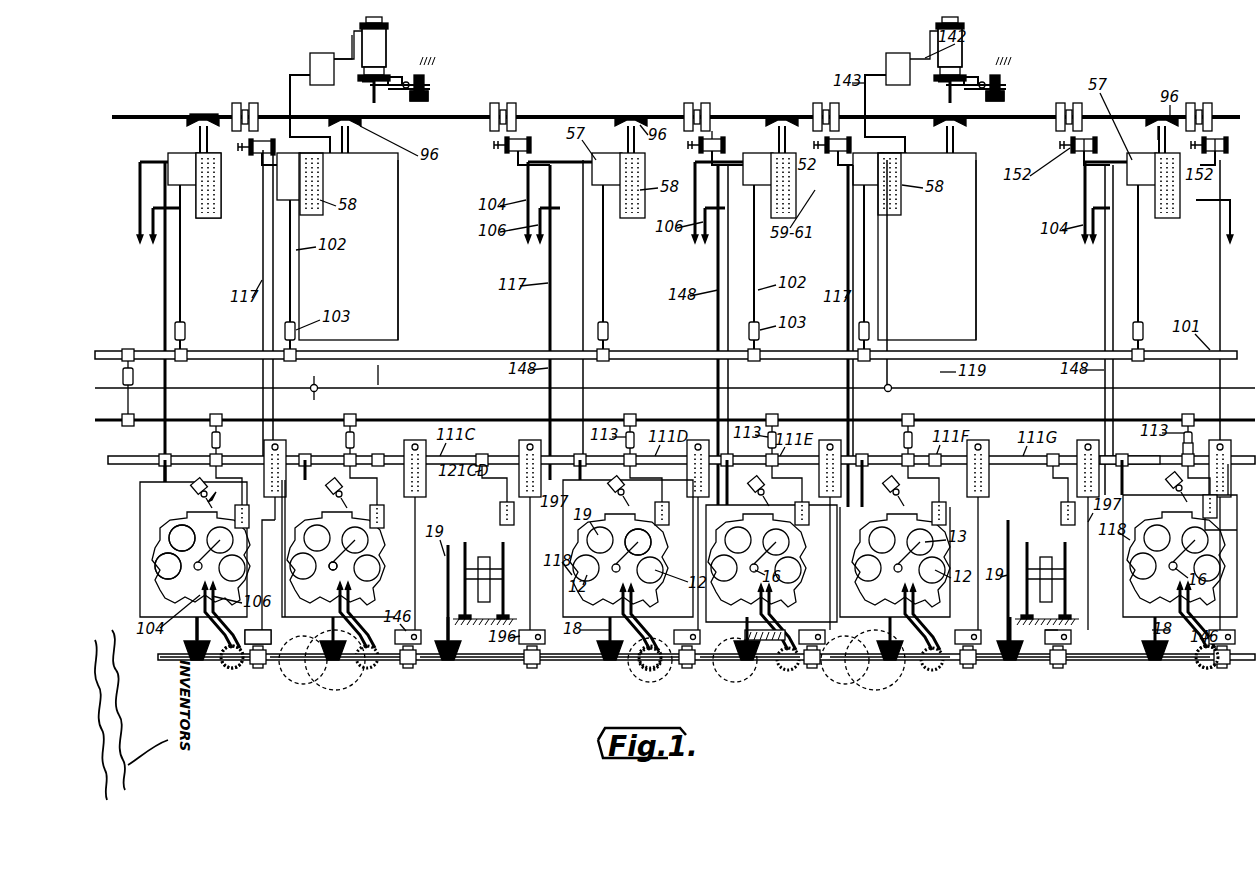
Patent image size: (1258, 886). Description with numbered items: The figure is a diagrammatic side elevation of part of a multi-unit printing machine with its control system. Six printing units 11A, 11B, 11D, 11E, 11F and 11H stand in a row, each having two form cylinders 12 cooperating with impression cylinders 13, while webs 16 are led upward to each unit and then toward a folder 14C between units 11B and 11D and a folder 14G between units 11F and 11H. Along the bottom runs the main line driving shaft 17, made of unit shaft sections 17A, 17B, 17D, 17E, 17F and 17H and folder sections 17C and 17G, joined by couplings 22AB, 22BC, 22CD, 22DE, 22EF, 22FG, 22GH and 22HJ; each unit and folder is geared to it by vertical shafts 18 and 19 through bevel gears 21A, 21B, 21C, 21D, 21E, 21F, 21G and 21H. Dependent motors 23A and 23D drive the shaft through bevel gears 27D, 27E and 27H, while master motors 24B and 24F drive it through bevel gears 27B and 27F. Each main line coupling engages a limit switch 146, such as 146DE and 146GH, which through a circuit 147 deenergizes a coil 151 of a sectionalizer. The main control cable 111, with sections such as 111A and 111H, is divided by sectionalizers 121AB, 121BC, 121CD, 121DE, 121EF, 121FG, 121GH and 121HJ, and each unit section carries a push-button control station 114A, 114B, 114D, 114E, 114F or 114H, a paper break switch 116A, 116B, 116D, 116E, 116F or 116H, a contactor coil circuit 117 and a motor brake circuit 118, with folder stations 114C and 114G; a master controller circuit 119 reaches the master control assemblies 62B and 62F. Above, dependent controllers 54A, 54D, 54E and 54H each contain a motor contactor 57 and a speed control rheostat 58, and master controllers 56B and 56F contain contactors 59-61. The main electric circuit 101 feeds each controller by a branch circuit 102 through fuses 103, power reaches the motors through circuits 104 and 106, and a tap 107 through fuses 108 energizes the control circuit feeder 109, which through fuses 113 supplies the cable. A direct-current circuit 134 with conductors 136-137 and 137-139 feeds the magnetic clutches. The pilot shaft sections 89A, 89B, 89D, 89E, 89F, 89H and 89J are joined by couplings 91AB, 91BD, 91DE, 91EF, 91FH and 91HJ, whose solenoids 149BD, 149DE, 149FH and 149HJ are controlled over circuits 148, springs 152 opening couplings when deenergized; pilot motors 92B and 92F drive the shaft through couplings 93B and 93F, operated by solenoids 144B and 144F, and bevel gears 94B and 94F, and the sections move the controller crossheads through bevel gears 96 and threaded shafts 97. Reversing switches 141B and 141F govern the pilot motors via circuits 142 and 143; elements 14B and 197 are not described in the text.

The pilot shaft section 89A is at (140, 116).
The pilot shaft section 89B is at (318, 110).
The pilot shaft section 89D is at (610, 116).
The pilot shaft section 89E is at (730, 116).
The pilot shaft section 89F is at (900, 116).
The pilot shaft section 89H is at (1110, 116).
The pilot shaft section 89J is at (1220, 116).
The electrically operated coupling 91AB is at (242, 102).
The electrically operated coupling 91BD is at (503, 102).
The electrically operated coupling 91DE is at (696, 102).
The electrically operated coupling 91EF is at (826, 102).
The electrically operated coupling 91FH is at (1069, 102).
The electrically operated coupling 91HJ is at (1199, 102).
The spring 152 is at (500, 145).
The solenoid 149BD is at (512, 155).
The solenoid 149DE is at (742, 127).
The solenoid 149FH is at (1090, 150).
The solenoid 149HJ is at (1218, 158).
The dependent motor controller 54A is at (197, 160).
The dependent motor controller 54D is at (625, 155).
The dependent motor controller 54E is at (780, 153).
The dependent motor controller 54H is at (1158, 153).
The paired bevel gears 96 is at (215, 115).
The pair of bevel gears 94B is at (368, 122).
The pair of bevel gears 94F is at (965, 122).
The threaded shaft 97 is at (1158, 128).
The reversing switch 141B is at (312, 60).
The circuit 142 is at (345, 58).
The pilot motor 92B is at (390, 38).
The electrically operated coupling 93B is at (400, 82).
The solenoid 144B is at (430, 95).
The circuit 143 is at (288, 90).
The reversing switch 141F is at (887, 60).
The pilot motor 92F is at (965, 38).
The electrically operated coupling 93F is at (975, 82).
The solenoid 144F is at (1008, 94).
The solenoid operated motor contactor 57 is at (172, 160).
The speed control rheostat 58 is at (208, 216).
The solenoid operated motor contactors 59-61 is at (290, 176).
The master motor controller 56B is at (348, 246).
The master control assembly 62B is at (398, 280).
The master motor controller 56F is at (927, 246).
The master control assembly 62F is at (976, 232).
The circuit 104 is at (138, 188).
The circuit 106 is at (150, 218).
The contactor coil circuit 117 is at (162, 280).
The circuit 148 is at (1218, 276).
The circuit 147 is at (1118, 306).
The branch circuit 102 is at (183, 287).
The fuses 103 is at (186, 333).
The main electric circuit 101 is at (430, 350).
The circuit 134 is at (612, 387).
The conductors 136-137 is at (346, 372).
The conductors 137-139 is at (346, 401).
The master controller circuit 119 is at (380, 374).
The control circuit feeder 109 is at (440, 414).
The tap 107 is at (122, 370).
The fuses 108 is at (125, 388).
The fuses 113 is at (212, 437).
The valve 14B is at (340, 460).
The coil 151 is at (1184, 447).
The control cable section 111A is at (122, 456).
The control cable section 111H is at (1135, 456).
The main control cable 111 is at (1240, 489).
The sectionalizer 121AB is at (268, 470).
The sectionalizer 121BC is at (406, 468).
The sectionalizer 121CD is at (528, 450).
The sectionalizer 121DE is at (690, 466).
The sectionalizer 121EF is at (827, 440).
The sectionalizer 121FG is at (982, 445).
The sectionalizer 121GH is at (1086, 440).
The sectionalizer 121HJ is at (1208, 462).
The motor brake circuit 118 is at (140, 540).
The printing unit 11A is at (201, 590).
The printing unit 11B is at (336, 590).
The printing unit 11D is at (619, 592).
The printing unit 11E is at (757, 592).
The printing unit 11F is at (901, 592).
The printing unit 11H is at (1176, 590).
The vertical shaft 19 is at (178, 538).
The impression cylinder 13 is at (650, 542).
The form cylinder 12 is at (166, 570).
The web 16 is at (334, 568).
The paper break switch 116A is at (192, 490).
The push-button control station 114A is at (245, 503).
The paper break switch 116B is at (344, 484).
The push-button control station 114B is at (385, 503).
The paper break switch 116D is at (608, 488).
The push-button control station 114D is at (660, 505).
The paper break switch 116E is at (750, 485).
The push-button control station 114E is at (798, 505).
The paper break switch 116F is at (900, 490).
The push-button control station 114F is at (939, 495).
The paper break switch 116H is at (1168, 484).
The push-button control station 114H is at (1203, 504).
The folder 14C is at (488, 548).
The push-button control station 114C is at (510, 504).
The folder 14G is at (1048, 545).
The push-button control station 114G is at (1062, 503).
The line 197 is at (416, 508).
The main line driving shaft 17 is at (1230, 664).
The unit shaft section 17A is at (215, 663).
The unit shaft section 17B is at (372, 653).
The shaft section 17C is at (488, 662).
The unit shaft section 17D is at (562, 662).
The unit shaft section 17E is at (782, 662).
The unit shaft section 17F is at (900, 662).
The shaft section 17G is at (1043, 663).
The unit shaft section 17H is at (1137, 645).
The coupling 22AB is at (262, 664).
The coupling 22BC is at (410, 664).
The coupling 22CD is at (533, 664).
The coupling 22DE is at (688, 664).
The coupling 22EF is at (815, 664).
The coupling 22FG is at (966, 664).
The coupling 22GH is at (1060, 664).
The coupling 22HJ is at (1220, 664).
The limit switch 146 is at (262, 633).
The limit switch 146DE is at (770, 638).
The limit switch 146GH is at (1050, 632).
The pair of cooperating bevel gears 21A is at (197, 662).
The pair of cooperating bevel gears 21B is at (340, 662).
The pair of cooperating bevel gears 21C is at (450, 664).
The pair of cooperating bevel gears 21D is at (608, 664).
The pair of cooperating bevel gears 21E is at (748, 664).
The pair of cooperating bevel gears 21F is at (895, 660).
The pair of cooperating bevel gears 21G is at (1012, 664).
The pair of cooperating bevel gears 21H is at (1158, 664).
The vertical shaft 18 is at (196, 630).
The dependent motor 23A is at (236, 668).
The dependent motor 23D is at (645, 668).
The bevel gears 27B is at (330, 690).
The master motor 24B is at (365, 690).
The bevel gears 27D is at (660, 675).
The bevel gears 27E is at (728, 680).
The bevel gears 27F is at (870, 685).
The master motor 24F is at (895, 680).
The bevel gears 27H is at (1150, 672).